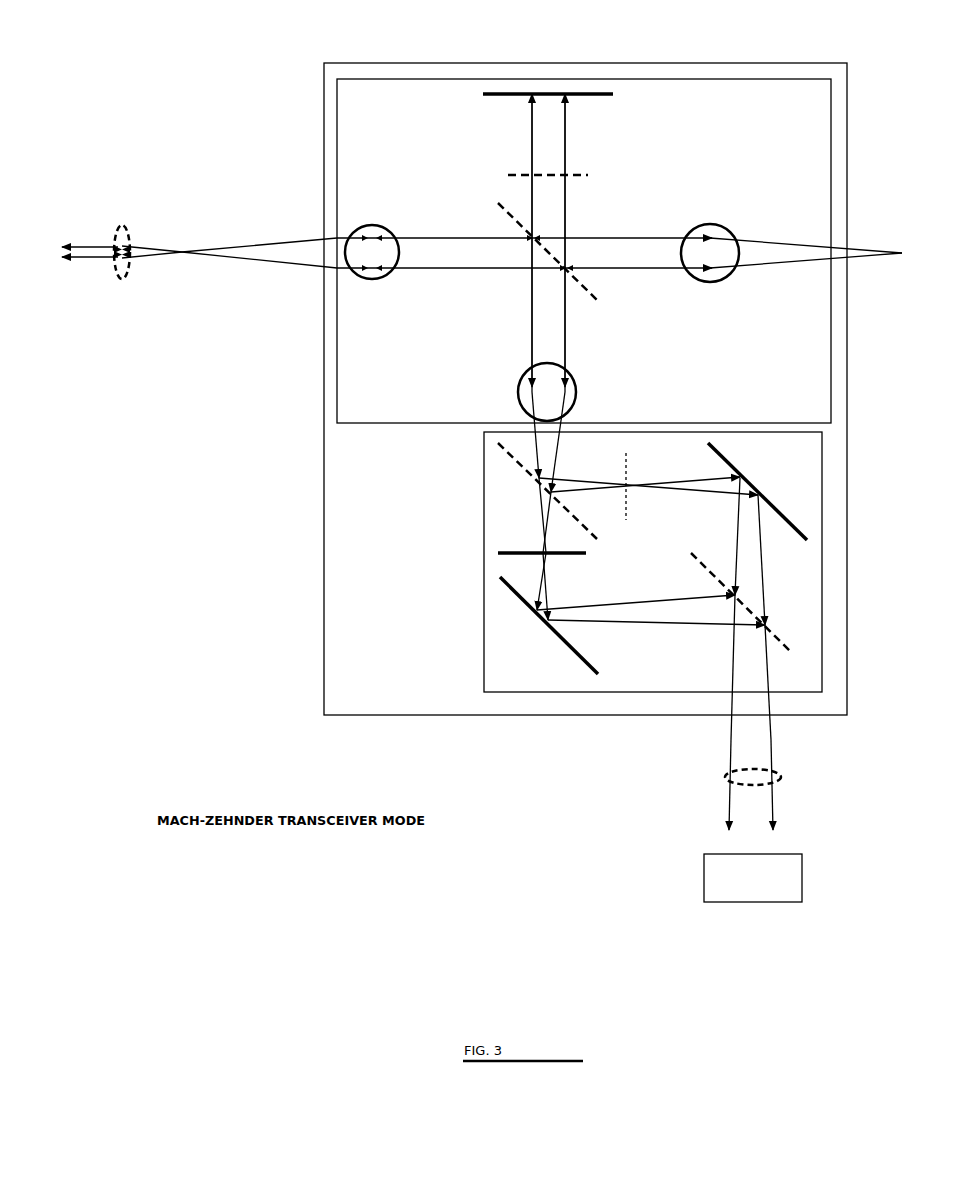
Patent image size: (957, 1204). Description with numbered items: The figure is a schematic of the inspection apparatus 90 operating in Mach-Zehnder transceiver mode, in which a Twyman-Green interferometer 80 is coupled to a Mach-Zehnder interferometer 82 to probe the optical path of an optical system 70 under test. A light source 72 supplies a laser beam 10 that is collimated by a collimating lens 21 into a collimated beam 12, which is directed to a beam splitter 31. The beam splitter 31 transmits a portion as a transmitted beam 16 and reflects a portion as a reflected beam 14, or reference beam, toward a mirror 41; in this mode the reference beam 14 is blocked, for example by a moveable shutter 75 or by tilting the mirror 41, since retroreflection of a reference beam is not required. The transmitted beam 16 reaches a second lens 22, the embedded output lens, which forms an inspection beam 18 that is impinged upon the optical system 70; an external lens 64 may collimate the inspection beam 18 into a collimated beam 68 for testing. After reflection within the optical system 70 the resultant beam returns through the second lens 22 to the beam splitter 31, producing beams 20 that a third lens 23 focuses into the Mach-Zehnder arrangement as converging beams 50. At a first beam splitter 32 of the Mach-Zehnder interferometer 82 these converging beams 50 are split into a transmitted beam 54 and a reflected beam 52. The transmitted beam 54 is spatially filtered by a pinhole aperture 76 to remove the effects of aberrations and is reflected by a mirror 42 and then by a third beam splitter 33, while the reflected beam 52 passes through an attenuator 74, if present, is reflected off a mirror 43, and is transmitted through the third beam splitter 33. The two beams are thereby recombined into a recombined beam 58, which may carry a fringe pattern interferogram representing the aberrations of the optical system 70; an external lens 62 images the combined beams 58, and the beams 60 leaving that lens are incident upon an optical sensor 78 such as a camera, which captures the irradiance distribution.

The laser beam 10 is at (800, 258).
The collimated beam 12 is at (598, 268).
The reflected beam 14 is at (565, 108).
The transmitted beam 16 is at (448, 240).
The inspection beam 18 is at (298, 268).
The beams 20 is at (508, 296).
The collimating lens 21 is at (712, 228).
The second lens 22 is at (355, 272).
The third lens 23 is at (573, 378).
The beam splitter 31 is at (503, 212).
The first beam splitter of the Mach-Zehnder interferometer arrangement 32 is at (525, 470).
The third beam splitter 33 is at (780, 630).
The mirror 41 is at (605, 92).
The mirror 42 is at (528, 600).
The mirror 43 is at (722, 457).
The converging beams 50 is at (537, 449).
The reflected beam 52 is at (708, 498).
The transmitted beam 54 is at (547, 505).
The recombined beam 58 is at (773, 748).
The beams to detector 60 is at (773, 815).
The external lens 62 is at (755, 783).
The external lens 64 is at (128, 232).
The collimated beam 68 is at (92, 250).
The optical system 70 is at (33, 250).
The light source 72 is at (903, 258).
The attenuator 74 is at (628, 465).
The moveable shutter 75 is at (508, 172).
The pinhole aperture 76 is at (513, 552).
The optical sensor 78 is at (765, 902).
The Twyman-Green interferometer 80 is at (680, 78).
The Mach-Zehnder interferometer 82 is at (822, 568).
The apparatus 90 is at (324, 118).